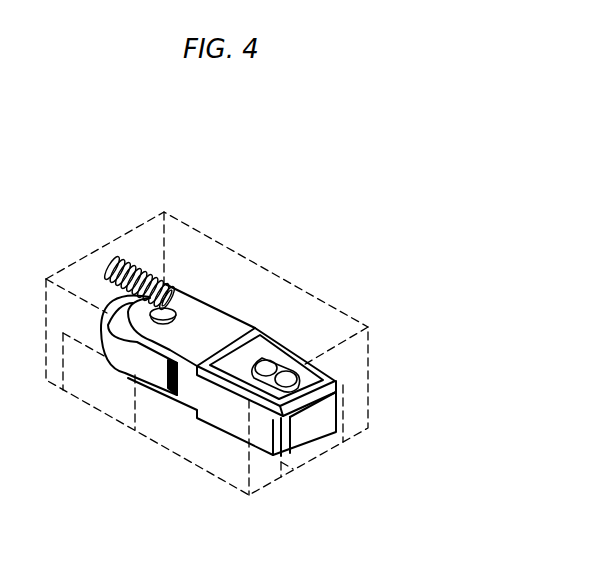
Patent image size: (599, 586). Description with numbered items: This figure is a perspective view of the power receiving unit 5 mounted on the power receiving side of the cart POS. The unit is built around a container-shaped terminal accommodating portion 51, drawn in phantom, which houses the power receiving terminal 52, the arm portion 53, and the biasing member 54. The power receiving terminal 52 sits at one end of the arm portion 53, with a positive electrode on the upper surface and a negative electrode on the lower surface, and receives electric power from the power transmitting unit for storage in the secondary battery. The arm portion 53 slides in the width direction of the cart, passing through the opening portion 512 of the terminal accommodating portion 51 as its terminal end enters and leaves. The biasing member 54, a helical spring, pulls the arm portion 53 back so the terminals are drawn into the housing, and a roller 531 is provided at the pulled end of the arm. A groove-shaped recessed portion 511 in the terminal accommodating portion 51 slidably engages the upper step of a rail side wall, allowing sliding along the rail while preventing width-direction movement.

The power receiving unit 5 is at (207, 158).
The terminal accommodating portion 51 is at (232, 248).
The recessed portion 511 is at (72, 368).
The opening portion 512 is at (292, 470).
The power receiving terminal 52 is at (270, 373).
The arm portion 53 is at (313, 428).
The roller 531 is at (152, 372).
The biasing member 54 is at (138, 263).